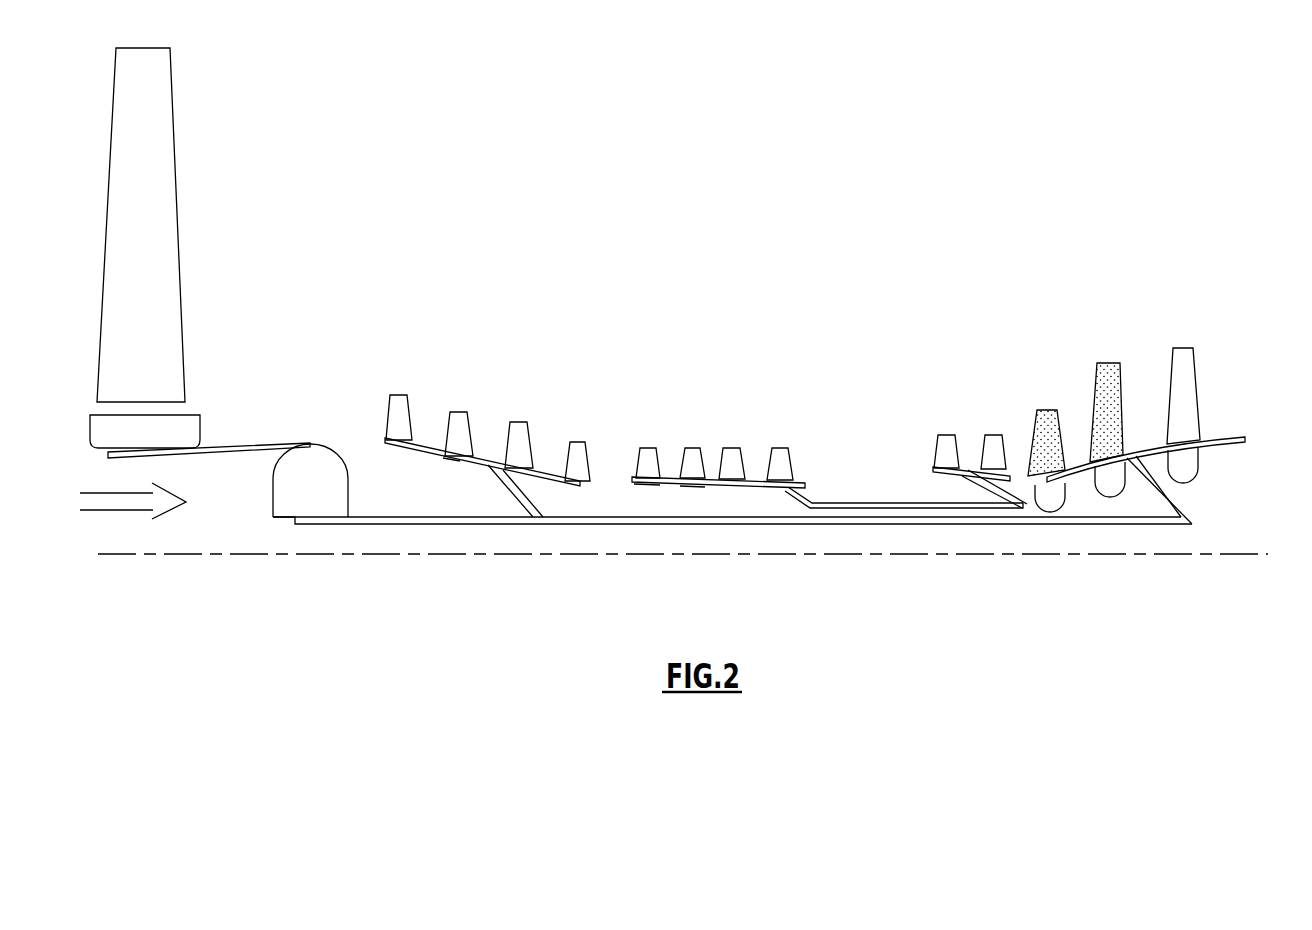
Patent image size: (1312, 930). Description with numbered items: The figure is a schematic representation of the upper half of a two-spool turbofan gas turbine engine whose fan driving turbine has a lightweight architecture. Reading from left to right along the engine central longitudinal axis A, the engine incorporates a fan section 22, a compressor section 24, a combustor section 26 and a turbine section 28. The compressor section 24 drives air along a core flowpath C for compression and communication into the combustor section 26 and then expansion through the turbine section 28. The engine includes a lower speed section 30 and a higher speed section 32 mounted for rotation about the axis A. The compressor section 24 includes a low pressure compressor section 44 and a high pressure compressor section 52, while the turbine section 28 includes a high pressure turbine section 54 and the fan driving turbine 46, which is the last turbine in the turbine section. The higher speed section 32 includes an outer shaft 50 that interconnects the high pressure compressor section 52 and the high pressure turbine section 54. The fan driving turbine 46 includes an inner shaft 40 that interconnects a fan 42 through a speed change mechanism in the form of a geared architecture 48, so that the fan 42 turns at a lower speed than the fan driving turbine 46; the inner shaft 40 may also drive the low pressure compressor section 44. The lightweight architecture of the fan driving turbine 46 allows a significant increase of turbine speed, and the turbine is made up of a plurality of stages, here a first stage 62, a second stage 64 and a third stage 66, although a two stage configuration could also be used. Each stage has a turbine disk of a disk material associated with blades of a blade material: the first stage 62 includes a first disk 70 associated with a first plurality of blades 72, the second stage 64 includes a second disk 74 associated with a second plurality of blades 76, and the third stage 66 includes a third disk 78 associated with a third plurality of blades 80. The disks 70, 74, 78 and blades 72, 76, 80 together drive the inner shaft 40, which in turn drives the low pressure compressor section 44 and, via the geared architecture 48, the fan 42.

The fan section 22 is at (242, 165).
The compressor section 24 is at (618, 333).
The combustor section 26 is at (850, 458).
The turbine section 28 is at (1237, 318).
The lower speed section 30 is at (732, 534).
The higher speed section 32 is at (878, 498).
The inner shaft 40 is at (1163, 527).
The fan 42 is at (165, 350).
The low pressure compressor section 44 is at (480, 458).
The fan driving turbine 46 is at (1200, 438).
The geared architecture 48 is at (318, 455).
The outer shaft 50 is at (833, 503).
The high pressure compressor section 52 is at (672, 477).
The high pressure turbine section 54 is at (970, 472).
The first stage 62 is at (1056, 404).
The second stage 64 is at (1127, 376).
The third stage 66 is at (1204, 372).
The first disk 70 is at (1068, 511).
The first plurality of blades 72 is at (1036, 432).
The second disk 74 is at (1117, 497).
The second plurality of blades 76 is at (1100, 378).
The third disk 78 is at (1196, 481).
The third plurality of blades 80 is at (1185, 402).
The engine central longitudinal axis A is at (1285, 554).
The core flowpath C is at (121, 501).